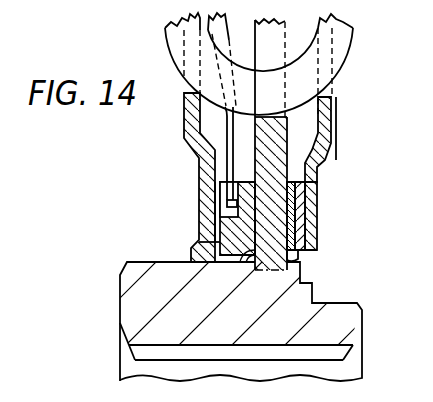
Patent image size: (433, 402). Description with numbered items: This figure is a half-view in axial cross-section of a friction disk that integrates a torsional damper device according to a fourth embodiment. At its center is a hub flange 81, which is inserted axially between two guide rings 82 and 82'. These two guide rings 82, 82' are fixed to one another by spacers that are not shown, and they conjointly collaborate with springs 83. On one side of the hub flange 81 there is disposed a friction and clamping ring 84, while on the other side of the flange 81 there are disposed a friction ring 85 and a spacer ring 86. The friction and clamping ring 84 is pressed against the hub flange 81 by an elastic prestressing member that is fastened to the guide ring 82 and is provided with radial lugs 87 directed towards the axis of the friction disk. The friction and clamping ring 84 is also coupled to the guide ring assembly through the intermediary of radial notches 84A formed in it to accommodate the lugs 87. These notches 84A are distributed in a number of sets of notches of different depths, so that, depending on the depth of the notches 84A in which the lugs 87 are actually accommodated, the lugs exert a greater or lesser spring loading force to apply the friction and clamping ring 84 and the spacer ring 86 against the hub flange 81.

The hub flange 81 is at (288, 133).
The guide ring 82 is at (235, 145).
The guide ring 82' is at (364, 112).
The springs 83 is at (346, 50).
The friction and clamping ring 84 is at (218, 231).
The radial notches 84A is at (228, 206).
The friction ring 85 is at (300, 191).
The spacer ring 86 is at (305, 251).
The radial lugs 87 is at (225, 132).